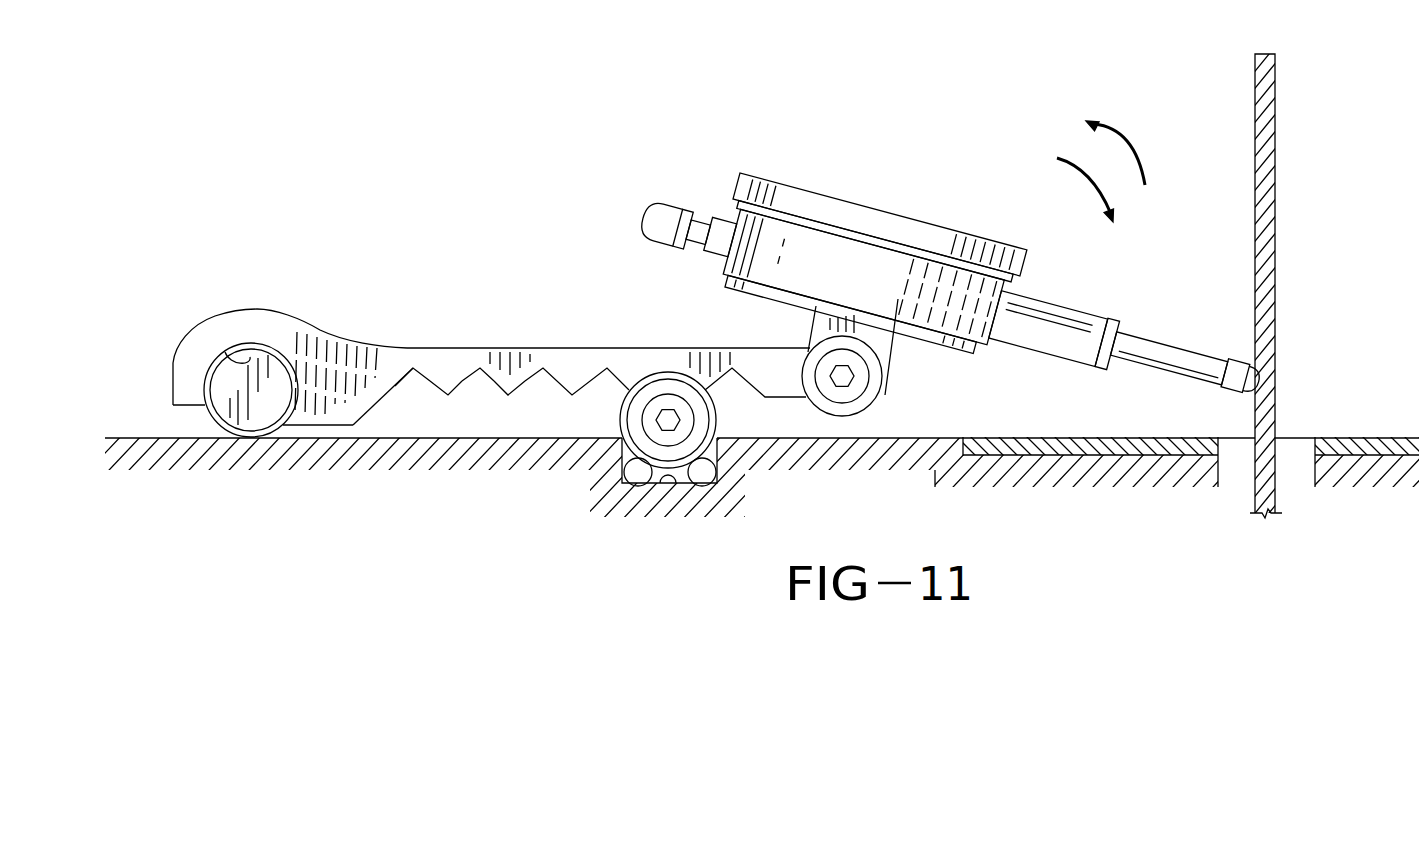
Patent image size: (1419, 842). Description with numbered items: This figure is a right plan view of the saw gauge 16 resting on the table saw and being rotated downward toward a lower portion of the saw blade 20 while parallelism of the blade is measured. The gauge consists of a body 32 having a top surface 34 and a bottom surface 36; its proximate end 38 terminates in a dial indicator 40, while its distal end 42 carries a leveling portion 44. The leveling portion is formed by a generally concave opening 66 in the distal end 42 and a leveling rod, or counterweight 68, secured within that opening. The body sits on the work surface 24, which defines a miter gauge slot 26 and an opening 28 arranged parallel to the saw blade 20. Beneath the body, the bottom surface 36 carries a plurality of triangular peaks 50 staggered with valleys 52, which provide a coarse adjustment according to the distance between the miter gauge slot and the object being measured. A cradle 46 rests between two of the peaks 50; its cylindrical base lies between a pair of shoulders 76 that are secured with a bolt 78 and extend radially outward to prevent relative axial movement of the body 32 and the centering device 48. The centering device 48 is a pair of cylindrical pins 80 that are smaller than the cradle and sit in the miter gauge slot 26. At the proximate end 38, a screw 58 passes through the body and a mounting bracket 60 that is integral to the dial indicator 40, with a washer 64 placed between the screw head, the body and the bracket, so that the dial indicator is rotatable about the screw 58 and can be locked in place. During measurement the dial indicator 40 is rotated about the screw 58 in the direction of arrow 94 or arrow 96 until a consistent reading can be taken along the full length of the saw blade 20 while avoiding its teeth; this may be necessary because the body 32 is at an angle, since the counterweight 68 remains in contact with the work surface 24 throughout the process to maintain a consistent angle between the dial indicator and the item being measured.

The saw gauge 16 is at (570, 346).
The saw blade 20 is at (1254, 238).
The work surface 24 is at (168, 437).
The miter gauge slots 26 is at (663, 478).
The opening 28 is at (1218, 471).
The body 32 is at (459, 346).
The top surface 34 is at (517, 347).
The bottom surface 36 is at (397, 393).
The proximate end 38 is at (884, 386).
The dial indicator 40 is at (905, 212).
The distal end 42 is at (172, 390).
The leveling portion 44 is at (282, 368).
The cradle 46 is at (615, 411).
The centering device 48 is at (716, 470).
The peaks 50 is at (449, 397).
The valleys 52 is at (415, 367).
The screw 58 is at (862, 373).
The mounting bracket 60 is at (814, 332).
The washer 64 is at (864, 402).
The generally concave opening 66 is at (250, 357).
The counterweight 68 is at (227, 380).
The shoulders 76 is at (645, 382).
The bolt 78 is at (691, 417).
The pins 80 is at (638, 479).
The arrow 94 is at (1090, 182).
The arrow 96 is at (1130, 152).